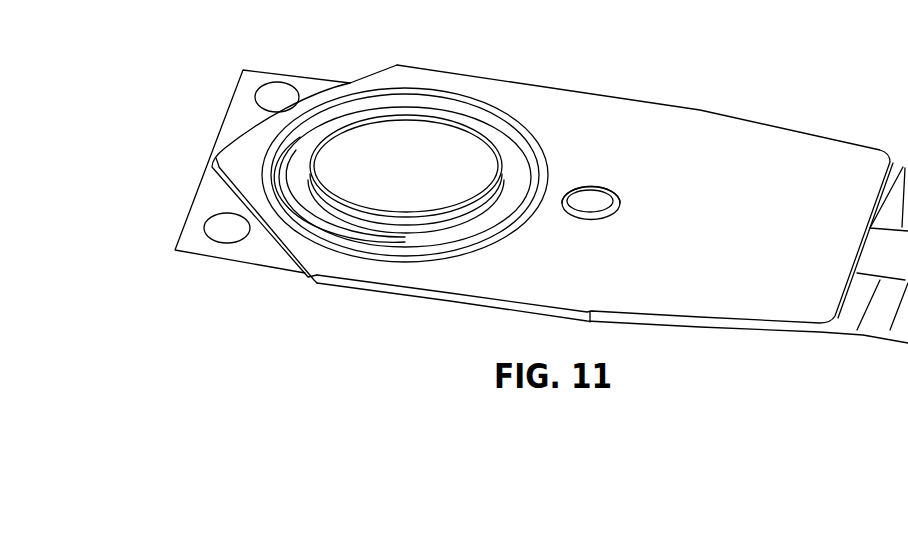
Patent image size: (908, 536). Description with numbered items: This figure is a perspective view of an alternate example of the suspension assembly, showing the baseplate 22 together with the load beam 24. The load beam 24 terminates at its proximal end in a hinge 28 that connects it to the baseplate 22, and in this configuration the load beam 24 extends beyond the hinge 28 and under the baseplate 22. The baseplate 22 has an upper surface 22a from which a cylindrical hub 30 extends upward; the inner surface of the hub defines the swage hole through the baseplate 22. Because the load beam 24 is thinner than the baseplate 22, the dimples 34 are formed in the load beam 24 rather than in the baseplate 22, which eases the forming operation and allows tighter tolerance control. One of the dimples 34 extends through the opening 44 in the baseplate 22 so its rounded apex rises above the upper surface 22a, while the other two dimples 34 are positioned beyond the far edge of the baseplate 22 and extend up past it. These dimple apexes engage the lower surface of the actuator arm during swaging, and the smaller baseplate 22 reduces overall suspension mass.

The baseplate 22 is at (784, 130).
The upper surface 22a is at (728, 182).
The load beam 24 is at (250, 262).
The hinge 28 is at (880, 333).
The cylindrical hub 30 is at (417, 100).
The dimples 34 is at (263, 102).
The opening 44 is at (572, 195).